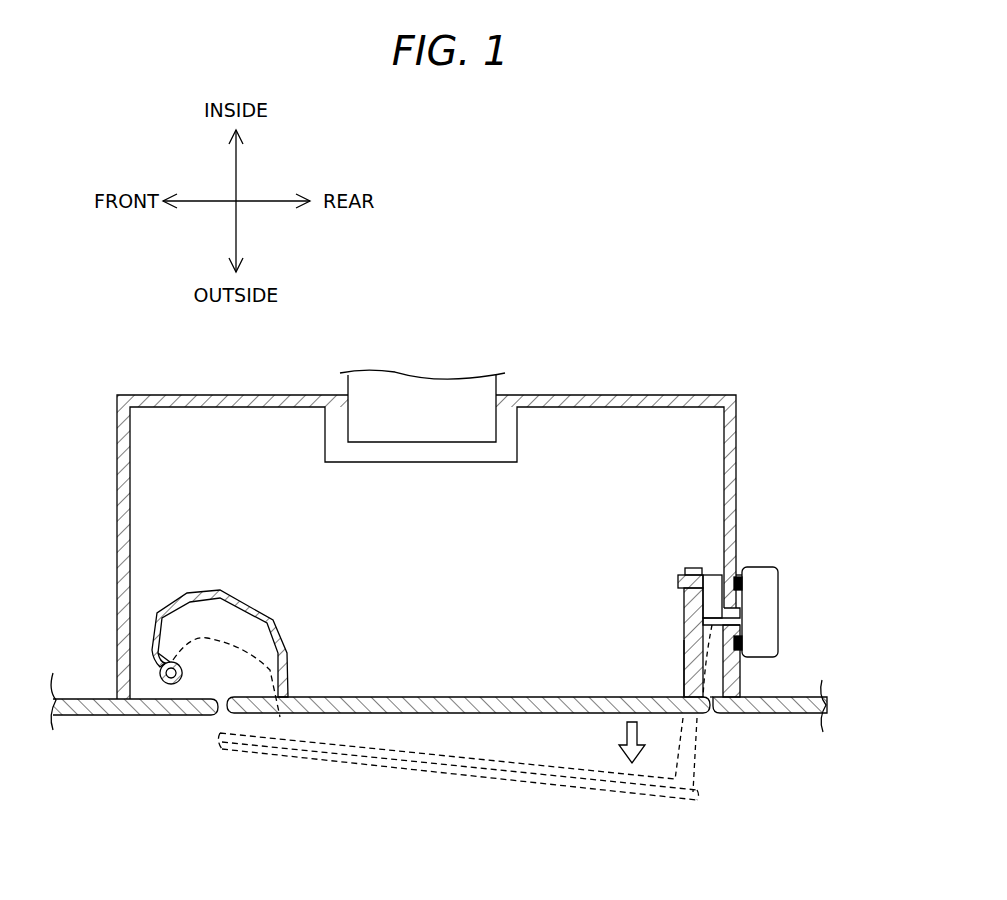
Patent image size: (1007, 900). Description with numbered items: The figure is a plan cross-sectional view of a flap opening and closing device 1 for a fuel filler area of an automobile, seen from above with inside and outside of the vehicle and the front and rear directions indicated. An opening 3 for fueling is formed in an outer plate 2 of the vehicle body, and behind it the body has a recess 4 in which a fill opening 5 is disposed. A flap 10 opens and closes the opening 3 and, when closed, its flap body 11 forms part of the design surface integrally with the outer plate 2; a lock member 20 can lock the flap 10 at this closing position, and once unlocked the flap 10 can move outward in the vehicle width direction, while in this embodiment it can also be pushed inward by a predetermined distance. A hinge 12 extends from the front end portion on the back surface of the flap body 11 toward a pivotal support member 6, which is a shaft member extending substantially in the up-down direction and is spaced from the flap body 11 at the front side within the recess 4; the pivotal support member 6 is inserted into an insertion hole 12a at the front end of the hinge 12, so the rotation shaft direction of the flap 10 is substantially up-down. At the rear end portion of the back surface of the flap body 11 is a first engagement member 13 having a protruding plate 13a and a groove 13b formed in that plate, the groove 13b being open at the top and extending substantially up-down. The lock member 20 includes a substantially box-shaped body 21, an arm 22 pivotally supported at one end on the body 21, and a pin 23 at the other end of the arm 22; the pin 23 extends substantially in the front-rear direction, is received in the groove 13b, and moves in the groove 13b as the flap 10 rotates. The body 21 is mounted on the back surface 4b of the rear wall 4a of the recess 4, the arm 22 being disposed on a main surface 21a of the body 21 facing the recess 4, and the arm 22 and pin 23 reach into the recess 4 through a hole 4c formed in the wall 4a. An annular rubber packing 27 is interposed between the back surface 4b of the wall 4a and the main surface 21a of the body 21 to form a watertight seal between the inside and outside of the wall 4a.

The flap opening and closing device 1 is at (690, 333).
The outer plate 2 is at (815, 715).
The opening 3 is at (708, 712).
The recess 4 is at (437, 575).
The wall 4a is at (737, 434).
The back surface 4b is at (737, 490).
The hole 4c is at (748, 600).
The fill opening 5 is at (411, 424).
The pivotal support member 6 is at (177, 685).
The flap 10 is at (240, 758).
The flap body 11 is at (340, 712).
The hinge 12 is at (243, 600).
The insertion hole 12a is at (152, 678).
The first engagement member 13 is at (685, 628).
The protruding plate 13a is at (684, 650).
The groove 13b is at (680, 574).
The lock member 20 is at (810, 545).
The body 21 is at (770, 620).
The main surface 21a is at (735, 705).
The arm 22 is at (712, 572).
The pin 23 is at (678, 585).
The packing 27 is at (752, 570).